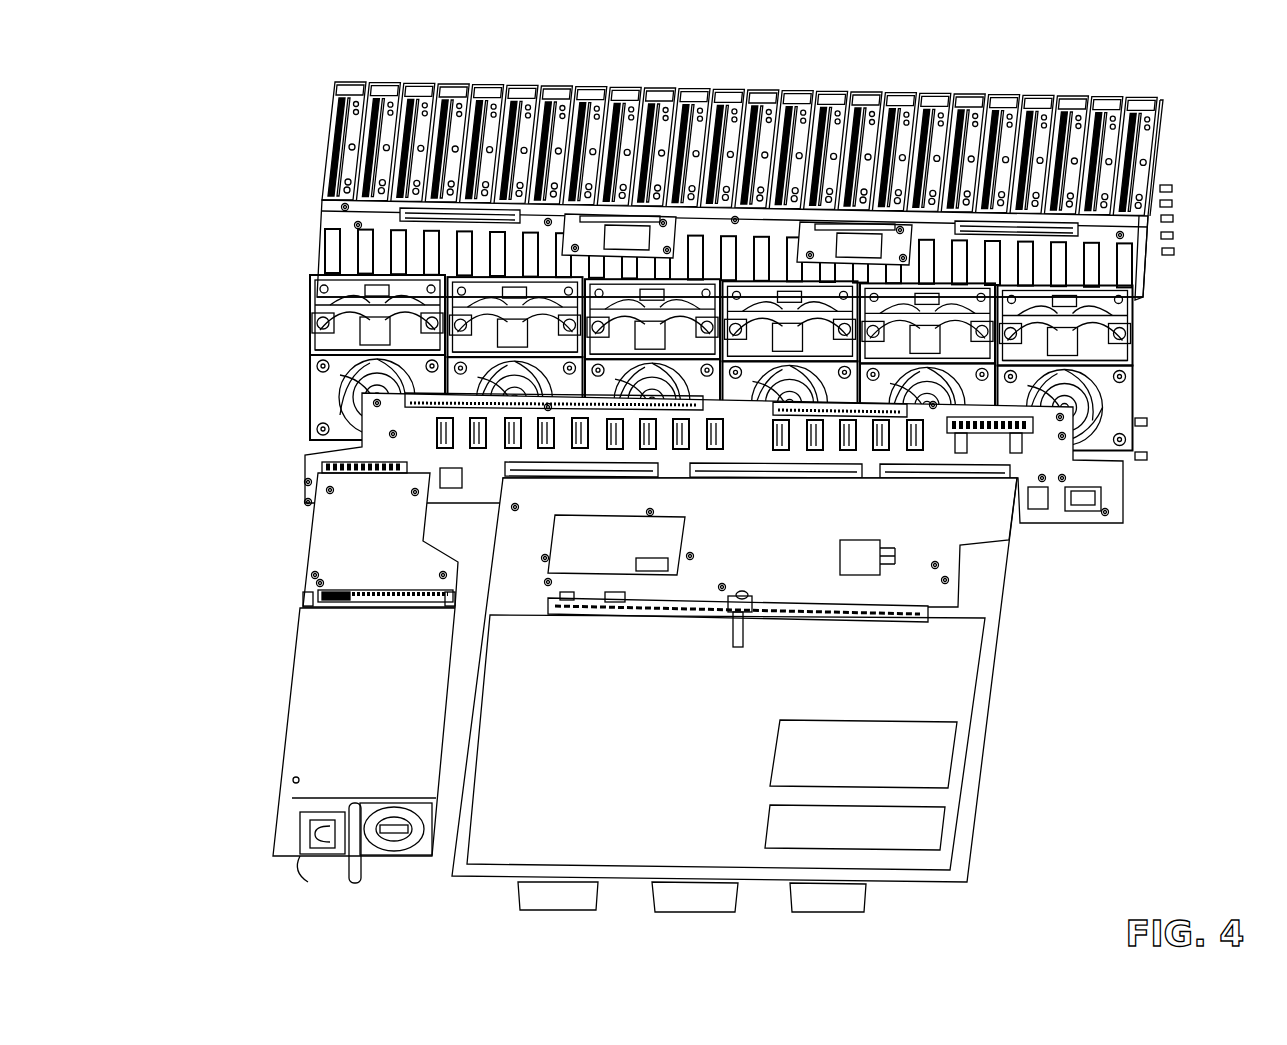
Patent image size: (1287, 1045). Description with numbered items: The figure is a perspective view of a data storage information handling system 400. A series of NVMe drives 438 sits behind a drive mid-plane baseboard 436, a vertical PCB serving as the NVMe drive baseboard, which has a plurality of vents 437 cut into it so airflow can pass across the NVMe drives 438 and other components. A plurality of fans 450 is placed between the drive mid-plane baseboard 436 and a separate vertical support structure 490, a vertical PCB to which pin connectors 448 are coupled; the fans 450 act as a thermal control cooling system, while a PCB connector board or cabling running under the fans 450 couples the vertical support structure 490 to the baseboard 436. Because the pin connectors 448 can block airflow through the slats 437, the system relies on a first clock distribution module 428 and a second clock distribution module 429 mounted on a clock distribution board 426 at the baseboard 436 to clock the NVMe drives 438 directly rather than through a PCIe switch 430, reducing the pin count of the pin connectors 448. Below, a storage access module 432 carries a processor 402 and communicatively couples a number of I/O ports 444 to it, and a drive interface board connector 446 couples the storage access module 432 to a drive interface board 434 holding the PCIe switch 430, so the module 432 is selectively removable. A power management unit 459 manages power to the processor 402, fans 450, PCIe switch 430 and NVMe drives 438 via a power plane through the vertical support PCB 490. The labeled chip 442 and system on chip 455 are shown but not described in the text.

The data storage information handling system 400 is at (152, 136).
The clock distribution board 426 is at (555, 85).
The second clock distribution module 429 is at (634, 232).
The vents 437 is at (773, 250).
The first clock distribution module 428 is at (851, 237).
The NVMe drives 438 is at (748, 167).
The drive mid-plane baseboard 436 is at (1145, 298).
The pin connectors 448 is at (306, 282).
The plurality of fans 450 is at (716, 400).
The vertical support structure 490 is at (1112, 497).
The PCIe switch 430 is at (540, 538).
The management chip 442 is at (900, 548).
The drive interface board 434 is at (945, 577).
The drive interface board connector 446 is at (935, 622).
The power management unit 459 is at (305, 686).
The storage access module 432 is at (646, 742).
The system on chip 455 is at (955, 760).
The processor 402 is at (945, 828).
The I/O ports 444 is at (518, 892).